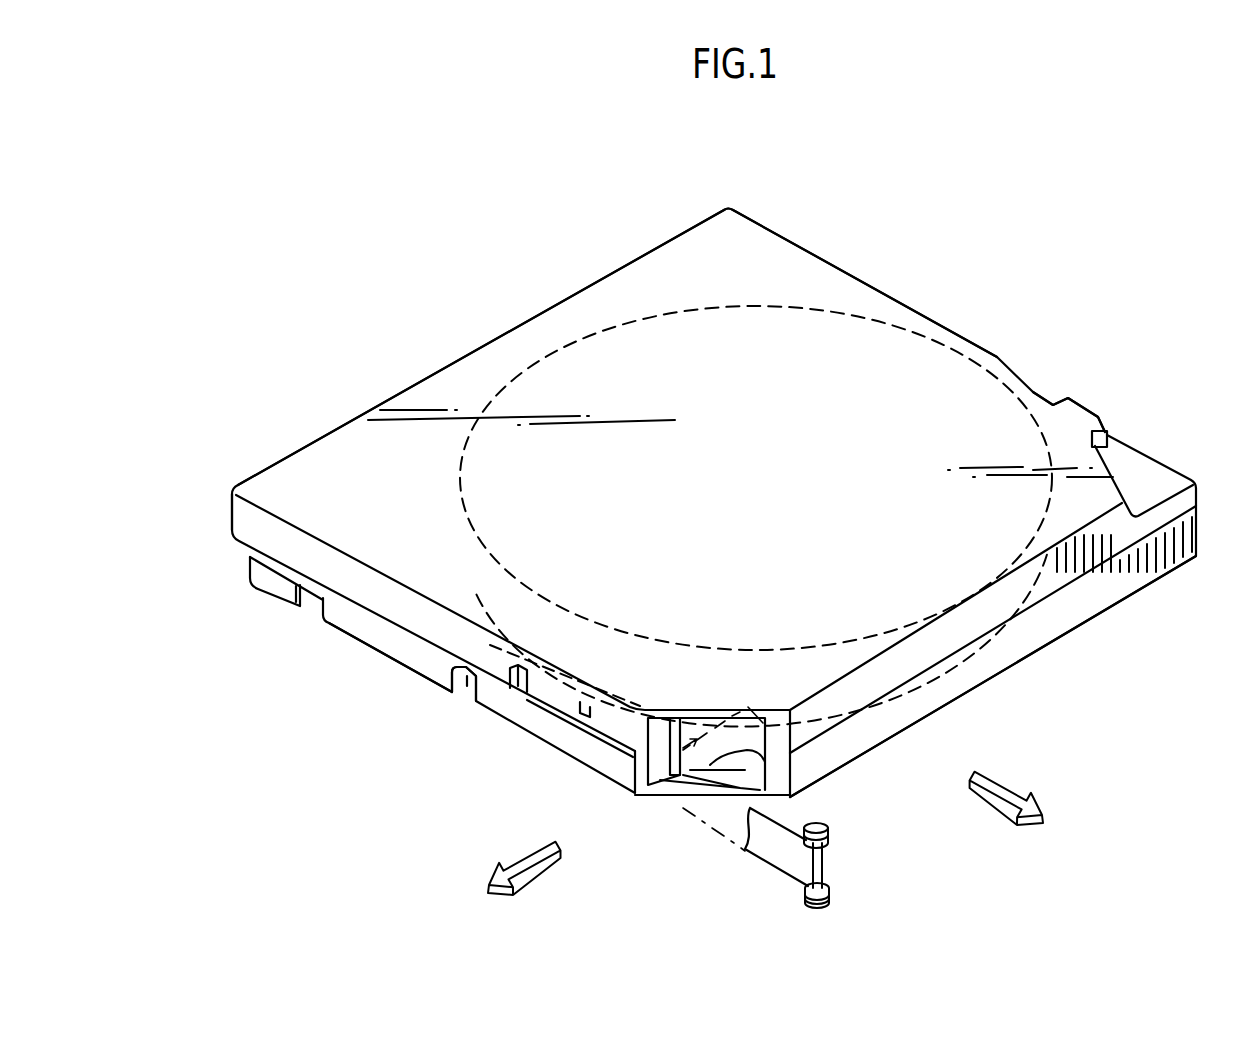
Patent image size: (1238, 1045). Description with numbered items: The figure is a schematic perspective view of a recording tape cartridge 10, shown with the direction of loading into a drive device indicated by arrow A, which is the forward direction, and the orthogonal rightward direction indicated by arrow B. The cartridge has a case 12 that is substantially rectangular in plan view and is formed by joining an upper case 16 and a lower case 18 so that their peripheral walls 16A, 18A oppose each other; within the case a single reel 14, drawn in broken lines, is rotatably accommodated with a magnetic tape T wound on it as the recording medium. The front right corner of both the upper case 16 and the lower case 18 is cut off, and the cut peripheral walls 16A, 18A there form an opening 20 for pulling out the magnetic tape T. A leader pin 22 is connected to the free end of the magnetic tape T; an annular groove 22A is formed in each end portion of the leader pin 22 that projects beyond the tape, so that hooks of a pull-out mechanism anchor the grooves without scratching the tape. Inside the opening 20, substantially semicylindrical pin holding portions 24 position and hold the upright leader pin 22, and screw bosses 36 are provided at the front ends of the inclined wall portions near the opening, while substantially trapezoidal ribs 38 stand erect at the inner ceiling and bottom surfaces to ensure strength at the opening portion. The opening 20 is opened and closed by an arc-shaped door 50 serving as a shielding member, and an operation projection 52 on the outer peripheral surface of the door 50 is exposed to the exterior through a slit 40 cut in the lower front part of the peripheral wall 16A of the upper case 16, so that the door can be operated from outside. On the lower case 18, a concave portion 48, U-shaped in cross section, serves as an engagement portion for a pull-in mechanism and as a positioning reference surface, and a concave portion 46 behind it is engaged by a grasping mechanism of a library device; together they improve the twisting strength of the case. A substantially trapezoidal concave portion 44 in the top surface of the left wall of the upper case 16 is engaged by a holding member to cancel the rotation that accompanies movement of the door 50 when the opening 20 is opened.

The recording tape cartridge 10 is at (1008, 183).
The case 12 is at (757, 265).
The reel 14 is at (597, 355).
The upper case 16 is at (1058, 580).
The peripheral wall of the upper case 16A is at (243, 507).
The lower case 18 is at (1035, 640).
The peripheral wall of the lower case 18A is at (368, 633).
The opening 20 is at (657, 790).
The leader pin 22 is at (831, 822).
The annular groove 22A is at (825, 850).
The pin holding portion 24 is at (757, 752).
The screw boss 36 is at (647, 745).
The rib 38 is at (665, 790).
The slit 40 is at (577, 717).
The concave portion 44 is at (1035, 392).
The concave portion 46 is at (319, 602).
The concave portion 48 is at (462, 692).
The door 50 is at (563, 697).
The operation projection 52 is at (523, 690).
The magnetic tape T is at (780, 860).
The arrow A is at (1020, 800).
The arrow B is at (524, 873).